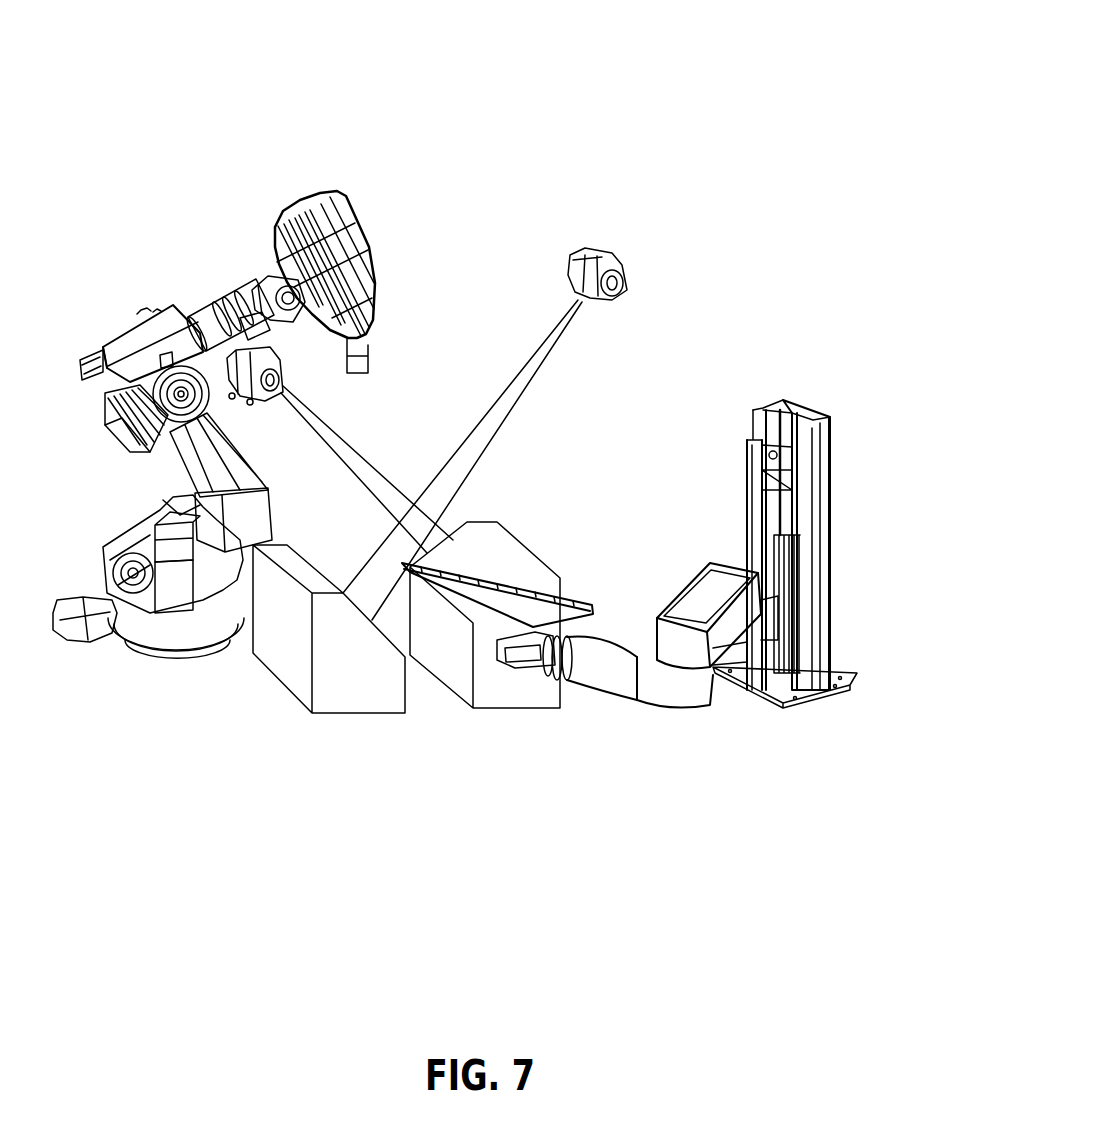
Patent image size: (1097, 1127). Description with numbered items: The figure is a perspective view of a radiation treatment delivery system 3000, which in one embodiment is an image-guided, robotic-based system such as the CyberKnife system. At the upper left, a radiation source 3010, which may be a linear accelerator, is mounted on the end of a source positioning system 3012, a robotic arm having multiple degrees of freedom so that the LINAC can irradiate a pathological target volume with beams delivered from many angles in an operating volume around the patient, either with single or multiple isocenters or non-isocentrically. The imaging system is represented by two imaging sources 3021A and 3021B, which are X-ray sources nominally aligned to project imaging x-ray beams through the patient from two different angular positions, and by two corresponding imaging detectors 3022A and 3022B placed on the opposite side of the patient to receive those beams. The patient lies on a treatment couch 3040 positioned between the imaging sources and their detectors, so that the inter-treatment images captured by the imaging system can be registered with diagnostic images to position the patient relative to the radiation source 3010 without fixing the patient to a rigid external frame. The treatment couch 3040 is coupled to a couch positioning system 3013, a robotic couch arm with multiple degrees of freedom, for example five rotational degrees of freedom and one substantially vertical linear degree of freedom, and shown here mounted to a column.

The radiation treatment delivery system 3000 is at (705, 68).
The radiation source 3010 is at (341, 213).
The source positioning system 3012 is at (224, 324).
The imaging source 3021A is at (283, 382).
The imaging source 3021B is at (597, 253).
The imaging detector 3022A is at (522, 708).
The imaging detector 3022B is at (302, 673).
The treatment couch 3040 is at (522, 578).
The couch positioning system 3013 is at (681, 712).